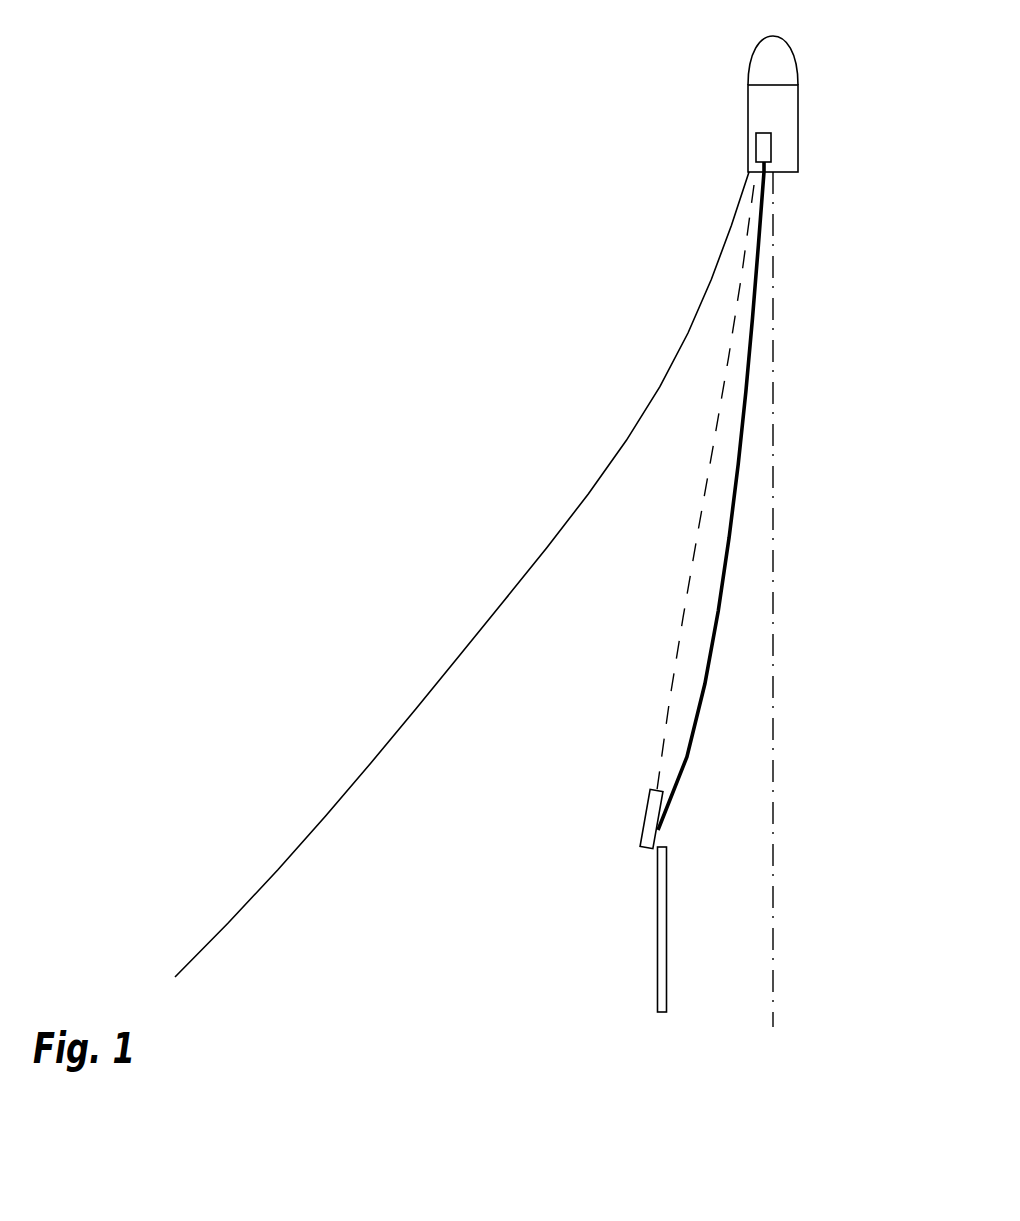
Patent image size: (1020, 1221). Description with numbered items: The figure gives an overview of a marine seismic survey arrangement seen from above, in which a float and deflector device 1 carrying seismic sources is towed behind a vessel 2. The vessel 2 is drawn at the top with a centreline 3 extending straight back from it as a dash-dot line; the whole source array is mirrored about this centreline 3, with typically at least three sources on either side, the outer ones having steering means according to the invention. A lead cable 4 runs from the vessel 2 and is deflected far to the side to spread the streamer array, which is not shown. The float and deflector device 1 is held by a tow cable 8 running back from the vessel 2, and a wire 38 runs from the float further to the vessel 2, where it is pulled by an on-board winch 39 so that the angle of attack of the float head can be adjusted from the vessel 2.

The float and deflector device 1 is at (633, 867).
The vessel 2 is at (782, 128).
The centreline 3 is at (773, 491).
The lead cable 4 is at (535, 562).
The tow cable 8 is at (695, 727).
The wire running to vessel 38 is at (680, 647).
The on-board winch 39 is at (772, 153).